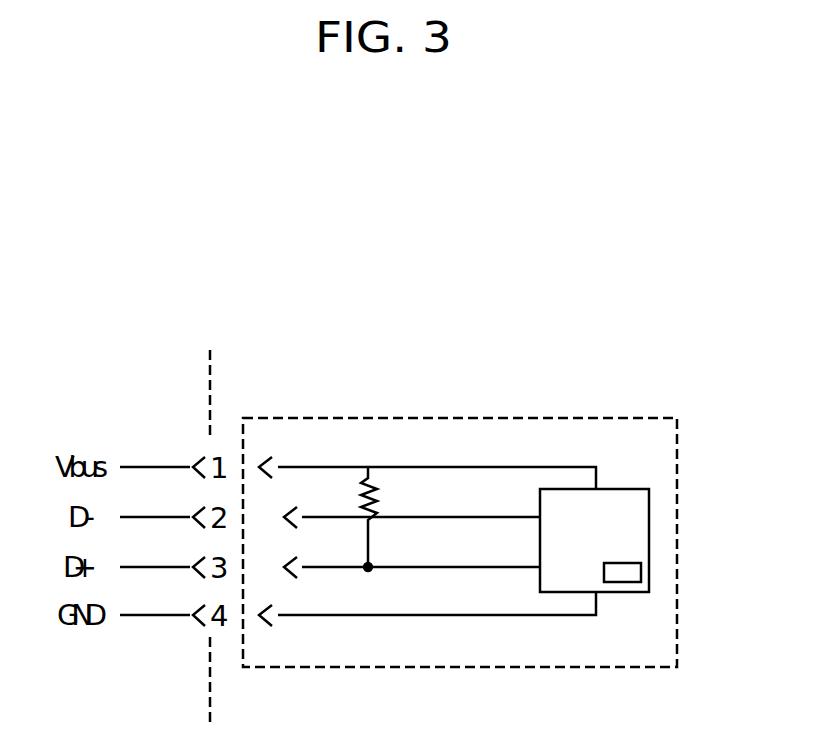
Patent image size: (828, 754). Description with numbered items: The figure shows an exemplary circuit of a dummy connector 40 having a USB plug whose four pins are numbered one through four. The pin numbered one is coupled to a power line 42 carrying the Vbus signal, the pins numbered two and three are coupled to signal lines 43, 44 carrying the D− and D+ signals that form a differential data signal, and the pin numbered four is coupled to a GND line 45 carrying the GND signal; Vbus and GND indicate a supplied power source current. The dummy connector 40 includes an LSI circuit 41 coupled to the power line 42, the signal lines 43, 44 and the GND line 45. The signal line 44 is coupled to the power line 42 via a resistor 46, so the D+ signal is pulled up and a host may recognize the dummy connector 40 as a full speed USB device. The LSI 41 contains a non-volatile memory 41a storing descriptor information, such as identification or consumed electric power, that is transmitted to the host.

The dummy connector 40 is at (518, 418).
The LSI circuit 41 is at (604, 488).
The non-volatile memory 41a is at (625, 574).
The power line 42 is at (448, 467).
The signal line 43 is at (448, 517).
The signal line 44 is at (448, 567).
The GND line 45 is at (448, 615).
The resistor 46 is at (356, 478).